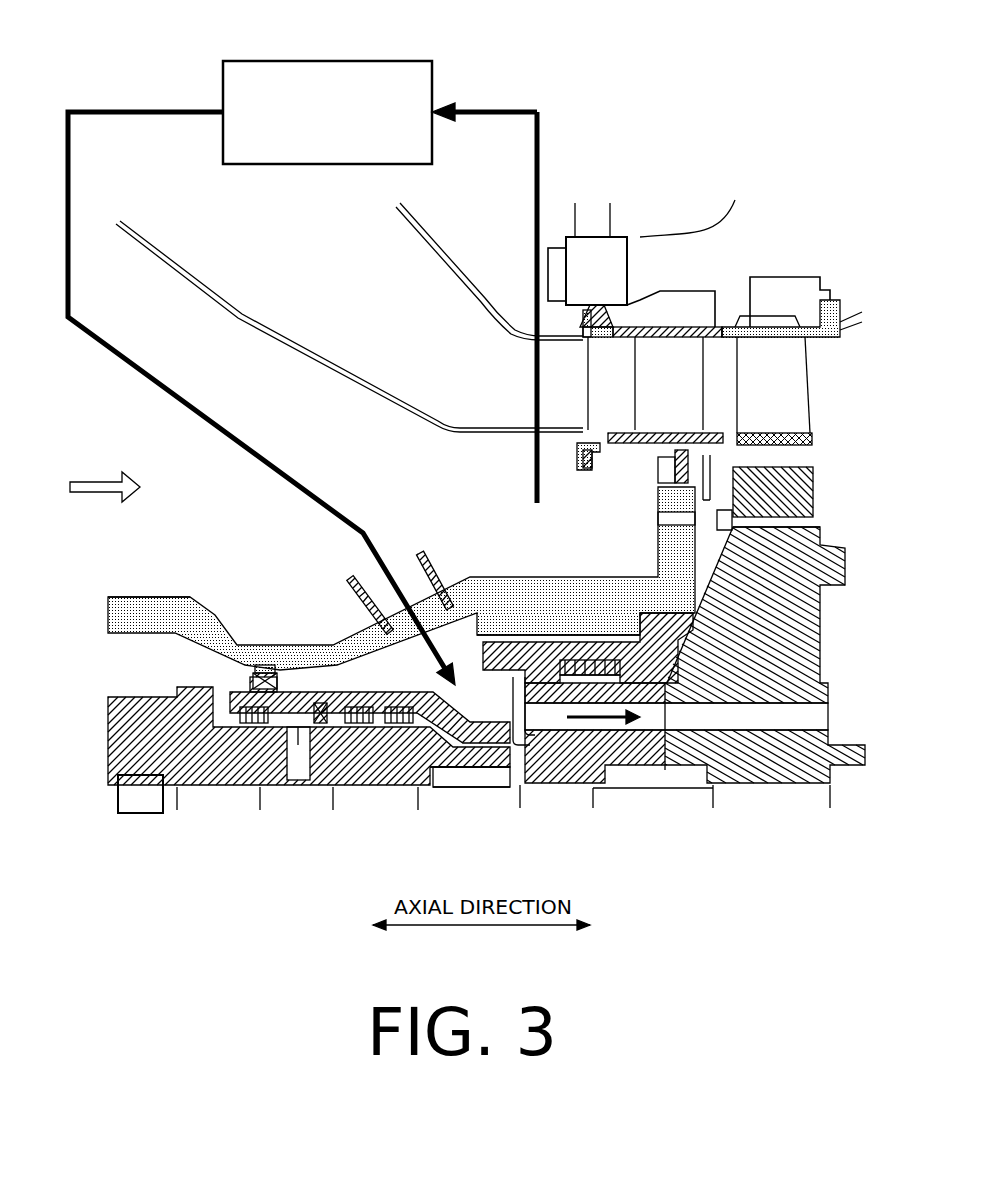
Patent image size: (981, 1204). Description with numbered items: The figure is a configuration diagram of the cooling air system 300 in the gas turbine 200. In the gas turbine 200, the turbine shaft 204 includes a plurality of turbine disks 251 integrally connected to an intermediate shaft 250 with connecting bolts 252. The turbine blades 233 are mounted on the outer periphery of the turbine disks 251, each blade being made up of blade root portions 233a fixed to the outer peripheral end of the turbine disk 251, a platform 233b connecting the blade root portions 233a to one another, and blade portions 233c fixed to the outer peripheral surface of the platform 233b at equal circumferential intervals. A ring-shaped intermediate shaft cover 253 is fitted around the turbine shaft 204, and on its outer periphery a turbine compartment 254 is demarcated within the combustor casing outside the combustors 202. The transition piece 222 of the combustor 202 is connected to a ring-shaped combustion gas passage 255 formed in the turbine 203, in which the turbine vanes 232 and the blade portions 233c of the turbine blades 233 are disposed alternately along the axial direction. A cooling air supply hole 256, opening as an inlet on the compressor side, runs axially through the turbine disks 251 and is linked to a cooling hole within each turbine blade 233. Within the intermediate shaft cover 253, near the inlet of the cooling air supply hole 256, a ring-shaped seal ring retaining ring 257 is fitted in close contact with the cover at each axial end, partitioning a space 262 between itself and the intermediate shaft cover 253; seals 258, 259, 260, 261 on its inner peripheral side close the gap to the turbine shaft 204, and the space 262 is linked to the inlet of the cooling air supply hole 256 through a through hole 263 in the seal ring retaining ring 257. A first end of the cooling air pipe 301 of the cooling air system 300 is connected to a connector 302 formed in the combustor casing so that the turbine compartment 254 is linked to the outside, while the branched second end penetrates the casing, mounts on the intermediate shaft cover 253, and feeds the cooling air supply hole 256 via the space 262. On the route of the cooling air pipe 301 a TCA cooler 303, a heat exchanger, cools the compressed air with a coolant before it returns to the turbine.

The gas turbine 200 is at (716, 66).
The combustor 202 is at (450, 236).
The turbine 203 is at (752, 190).
The turbine shaft 204 is at (108, 722).
The transition piece 222 is at (485, 303).
The turbine vane 232 is at (668, 353).
The turbine blade 233 is at (810, 355).
The blade root portion 233a is at (808, 480).
The platform 233b is at (805, 440).
The blade portion 233c is at (800, 390).
The intermediate shaft 250 is at (407, 786).
The turbine disk 251 is at (780, 785).
The connecting bolt 252 is at (468, 800).
The intermediate shaft cover 253 is at (173, 601).
The turbine compartment 254 is at (419, 513).
The combustion gas passage 255 is at (720, 330).
The cooling air supply hole 256 is at (643, 760).
The seal ring retaining ring 257 is at (207, 786).
The seal 258 is at (313, 786).
The seal 259 is at (250, 786).
The seal 260 is at (522, 740).
The seal 261 is at (627, 690).
The space 262 is at (353, 667).
The through hole 263 is at (467, 647).
The cooling air system 300 is at (194, 88).
The cooling air pipe 301 is at (70, 206).
The connector 302 is at (353, 608).
The TCA cooler 303 is at (385, 60).